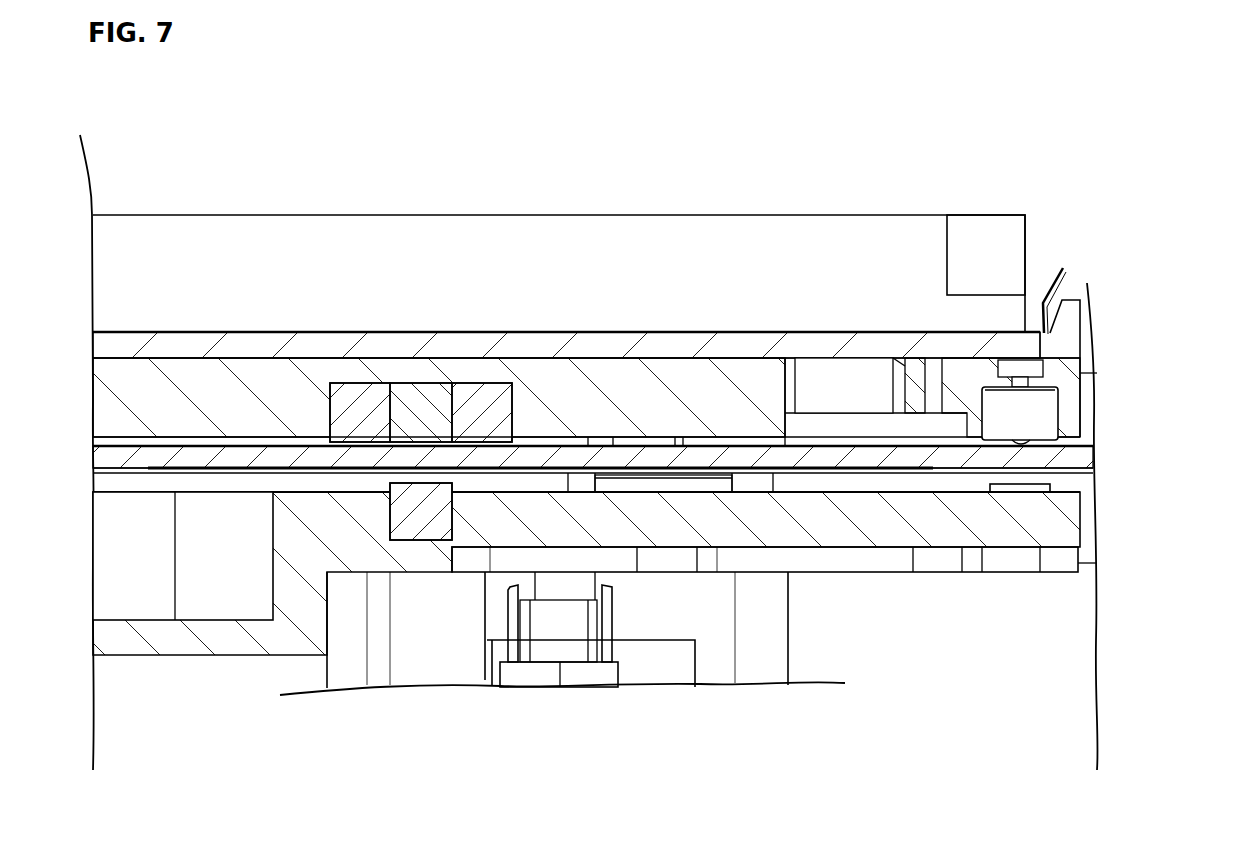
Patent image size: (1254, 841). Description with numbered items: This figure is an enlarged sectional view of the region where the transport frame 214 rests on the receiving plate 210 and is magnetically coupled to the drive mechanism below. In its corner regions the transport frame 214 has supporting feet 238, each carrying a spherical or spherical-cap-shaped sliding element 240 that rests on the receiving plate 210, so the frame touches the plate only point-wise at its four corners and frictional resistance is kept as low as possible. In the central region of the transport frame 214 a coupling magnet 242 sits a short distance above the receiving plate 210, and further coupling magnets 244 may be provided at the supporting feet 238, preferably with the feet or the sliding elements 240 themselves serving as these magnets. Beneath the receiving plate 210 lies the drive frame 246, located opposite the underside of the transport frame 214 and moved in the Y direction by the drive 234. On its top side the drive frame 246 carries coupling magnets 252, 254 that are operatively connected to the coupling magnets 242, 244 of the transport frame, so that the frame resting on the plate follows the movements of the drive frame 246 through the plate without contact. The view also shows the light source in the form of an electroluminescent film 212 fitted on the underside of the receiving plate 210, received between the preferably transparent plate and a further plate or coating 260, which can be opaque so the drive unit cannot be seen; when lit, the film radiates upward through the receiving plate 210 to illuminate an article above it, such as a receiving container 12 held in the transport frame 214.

The receiving container 12 is at (633, 250).
The transport frame 214 is at (736, 395).
The coupling magnet 242 is at (422, 398).
The receiving plate 210 is at (103, 457).
The plate or coating 260 is at (100, 471).
The electroluminescent film 212 is at (230, 470).
The coupling magnet 252 is at (418, 512).
The drive 234 is at (569, 665).
The drive frame 246 is at (925, 525).
The sliding element 240 is at (1018, 450).
The supporting foot 238 is at (1115, 402).
The coupling magnet 244 is at (1028, 418).
The coupling magnet 254 is at (1050, 488).